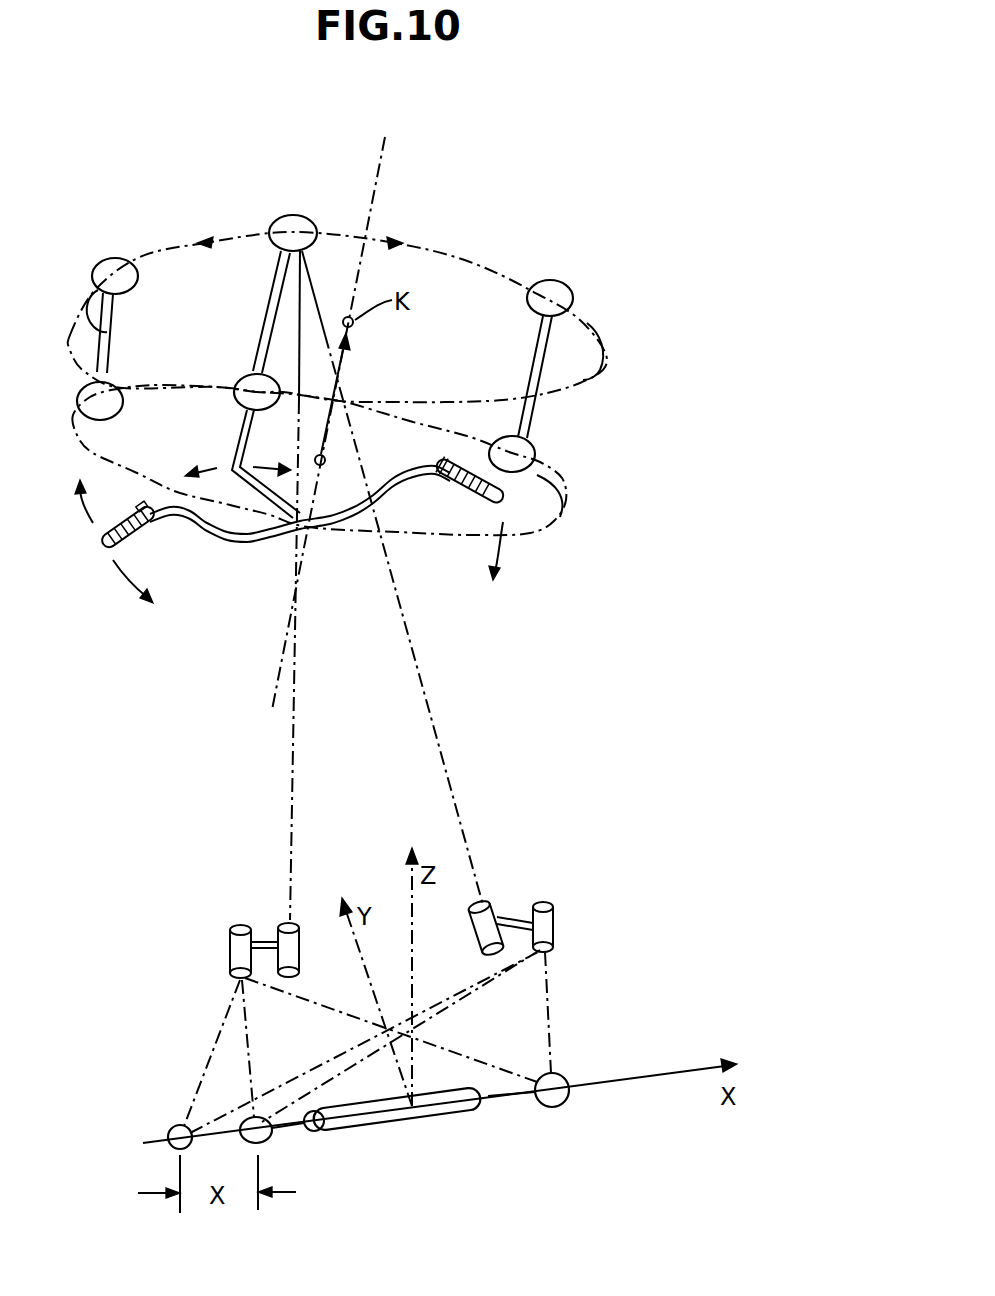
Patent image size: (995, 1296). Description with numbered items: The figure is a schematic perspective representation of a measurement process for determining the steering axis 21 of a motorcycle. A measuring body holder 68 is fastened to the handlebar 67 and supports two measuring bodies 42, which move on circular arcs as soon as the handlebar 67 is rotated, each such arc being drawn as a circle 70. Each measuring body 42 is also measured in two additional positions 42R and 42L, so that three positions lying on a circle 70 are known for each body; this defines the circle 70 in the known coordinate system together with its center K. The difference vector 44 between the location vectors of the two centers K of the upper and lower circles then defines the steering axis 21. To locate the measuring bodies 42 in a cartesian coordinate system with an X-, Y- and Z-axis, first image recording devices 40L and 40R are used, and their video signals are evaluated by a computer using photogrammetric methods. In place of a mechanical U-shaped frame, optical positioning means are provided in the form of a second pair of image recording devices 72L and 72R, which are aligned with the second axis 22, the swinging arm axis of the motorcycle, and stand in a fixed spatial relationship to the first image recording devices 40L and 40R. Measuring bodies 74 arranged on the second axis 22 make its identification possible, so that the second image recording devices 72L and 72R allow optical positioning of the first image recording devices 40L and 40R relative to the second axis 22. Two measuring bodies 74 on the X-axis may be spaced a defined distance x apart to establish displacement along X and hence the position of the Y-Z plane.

The steering axis 21 is at (387, 152).
The measuring body 42 is at (296, 225).
The additional position of measuring body 42L is at (117, 265).
The additional position of measuring body 42R is at (560, 302).
The circular locus of upper joints 70 is at (483, 267).
The difference vector 44 is at (357, 368).
The measuring body holder 68 is at (257, 493).
The handlebar 67 is at (263, 540).
The first image recording device 40L is at (280, 925).
The first image recording device 40R is at (488, 905).
The second image recording device 72L is at (236, 943).
The second image recording device 72R is at (548, 918).
The second axis 22 is at (650, 1082).
The measuring body 74 is at (270, 1140).